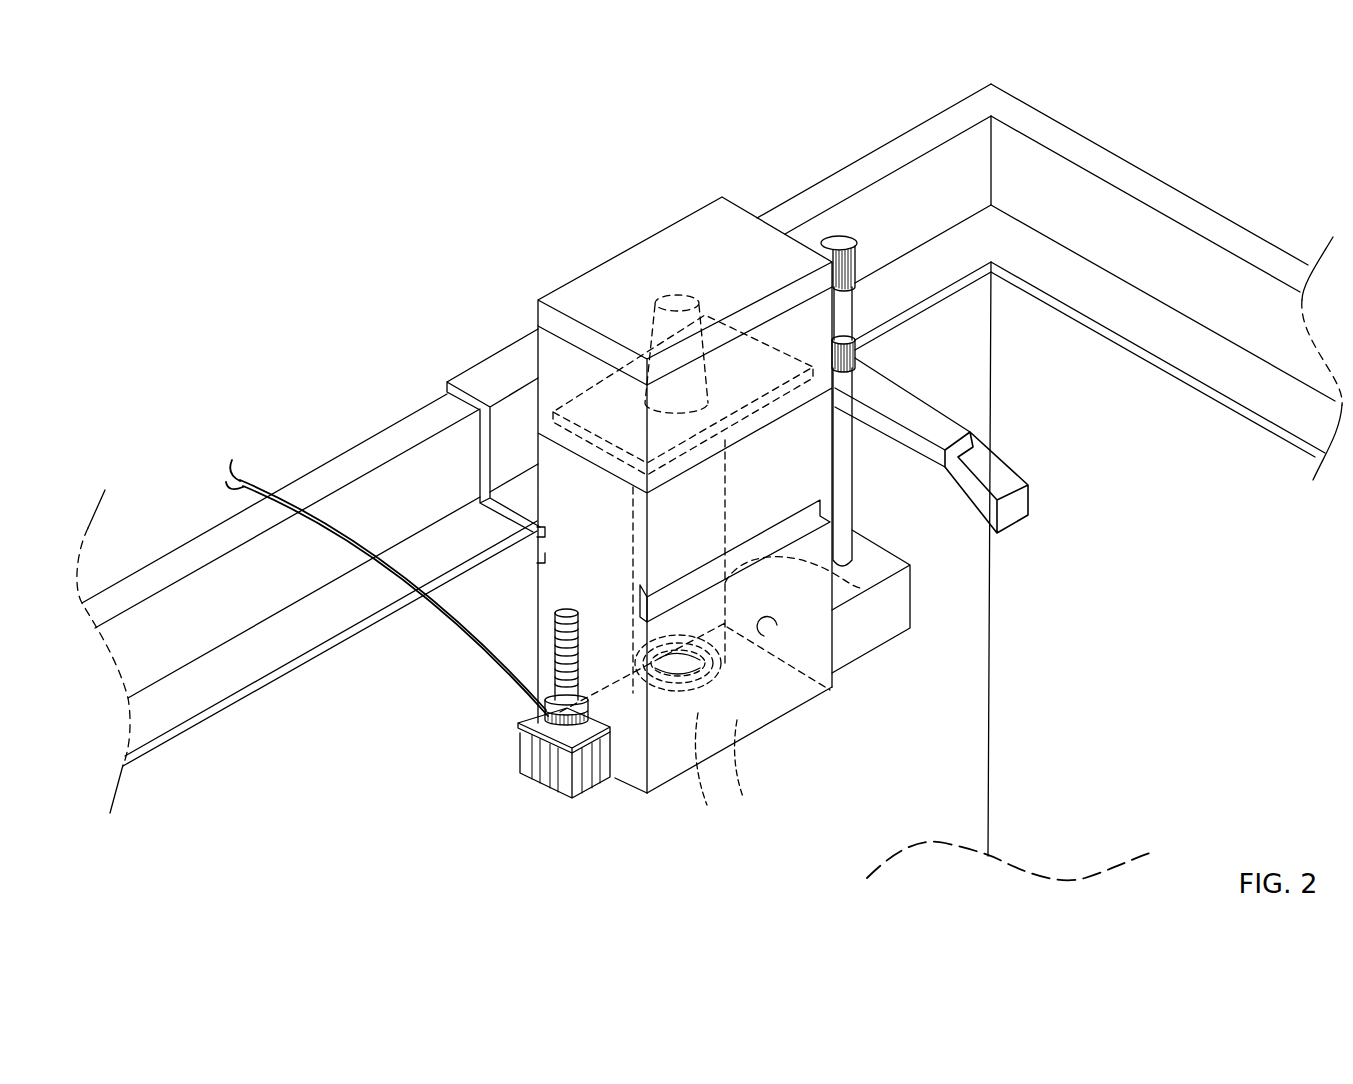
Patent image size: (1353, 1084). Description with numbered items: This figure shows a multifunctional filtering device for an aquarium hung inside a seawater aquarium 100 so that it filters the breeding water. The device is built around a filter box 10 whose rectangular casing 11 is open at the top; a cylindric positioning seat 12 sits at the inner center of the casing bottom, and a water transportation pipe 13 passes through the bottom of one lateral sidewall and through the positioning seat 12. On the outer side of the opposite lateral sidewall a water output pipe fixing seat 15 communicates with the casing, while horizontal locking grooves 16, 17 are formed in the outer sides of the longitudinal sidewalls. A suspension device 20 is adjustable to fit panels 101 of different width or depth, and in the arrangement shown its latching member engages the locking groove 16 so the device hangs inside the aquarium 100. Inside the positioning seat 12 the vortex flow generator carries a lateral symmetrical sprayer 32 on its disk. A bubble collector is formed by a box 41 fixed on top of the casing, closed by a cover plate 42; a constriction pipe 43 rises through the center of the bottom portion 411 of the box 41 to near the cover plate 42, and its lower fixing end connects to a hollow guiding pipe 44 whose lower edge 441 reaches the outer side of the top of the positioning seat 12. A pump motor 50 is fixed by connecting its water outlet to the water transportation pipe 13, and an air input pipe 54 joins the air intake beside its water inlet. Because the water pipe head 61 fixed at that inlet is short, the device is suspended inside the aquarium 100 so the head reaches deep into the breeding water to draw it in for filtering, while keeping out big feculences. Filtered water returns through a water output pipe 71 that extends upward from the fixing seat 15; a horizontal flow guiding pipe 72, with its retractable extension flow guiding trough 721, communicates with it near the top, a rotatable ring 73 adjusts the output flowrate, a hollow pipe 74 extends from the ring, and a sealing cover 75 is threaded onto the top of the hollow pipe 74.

The seawater aquarium 100 is at (1185, 166).
The panel 101 is at (1187, 348).
The filter box 10 is at (660, 812).
The rectangular casing 11 is at (813, 643).
The cylindric positioning seat 12 is at (741, 771).
The water transportation pipe 13 is at (706, 776).
The water output pipe fixing seat 15 is at (873, 638).
The horizontal locking groove 16 is at (535, 527).
The horizontal locking groove 17 is at (825, 533).
The suspension device 20 is at (455, 365).
The lateral symmetrical sprayer 32 is at (735, 715).
The box 41 is at (538, 333).
The bottom portion 411 is at (548, 410).
The cover plate 42 is at (707, 208).
The constriction pipe 43 is at (648, 325).
The hollow guiding pipe 44 is at (860, 588).
The lower edge 441 is at (812, 690).
The pump motor 50 is at (523, 770).
The air input pipe 54 is at (240, 478).
The water pipe head 61 is at (546, 708).
The water output pipe 71 is at (843, 438).
The horizontal flow guiding pipe 72 is at (957, 428).
The extension flow guiding trough 721 is at (1010, 515).
The rotatable ring 73 is at (858, 362).
The hollow pipe 74 is at (853, 293).
The sealing cover 75 is at (830, 240).